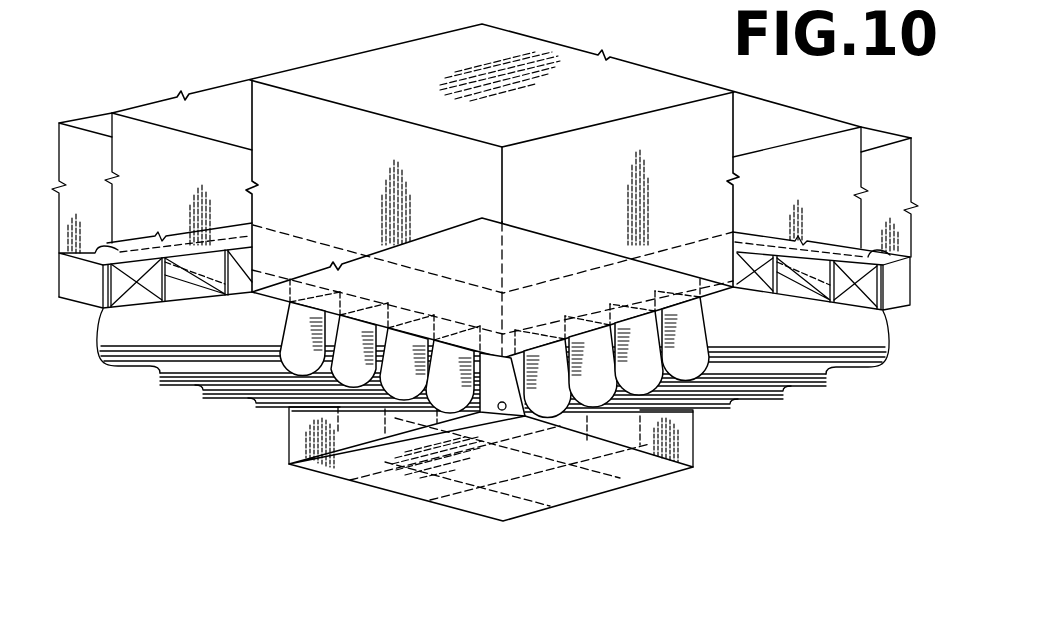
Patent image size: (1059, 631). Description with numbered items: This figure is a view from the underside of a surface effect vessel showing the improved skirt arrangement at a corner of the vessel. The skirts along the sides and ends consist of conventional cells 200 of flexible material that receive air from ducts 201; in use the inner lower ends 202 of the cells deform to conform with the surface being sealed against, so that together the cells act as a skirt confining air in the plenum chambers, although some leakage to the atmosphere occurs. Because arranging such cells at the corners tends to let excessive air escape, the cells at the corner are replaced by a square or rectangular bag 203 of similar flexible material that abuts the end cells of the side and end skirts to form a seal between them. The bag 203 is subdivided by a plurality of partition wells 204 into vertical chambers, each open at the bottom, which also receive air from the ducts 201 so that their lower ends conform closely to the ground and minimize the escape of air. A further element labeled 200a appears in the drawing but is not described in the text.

The cells 200 is at (247, 397).
The corner post 200a is at (540, 402).
The ducts 201 is at (73, 163).
The inner lower ends 202 is at (338, 396).
The bag 203 is at (610, 495).
The partition wells 204 is at (557, 460).